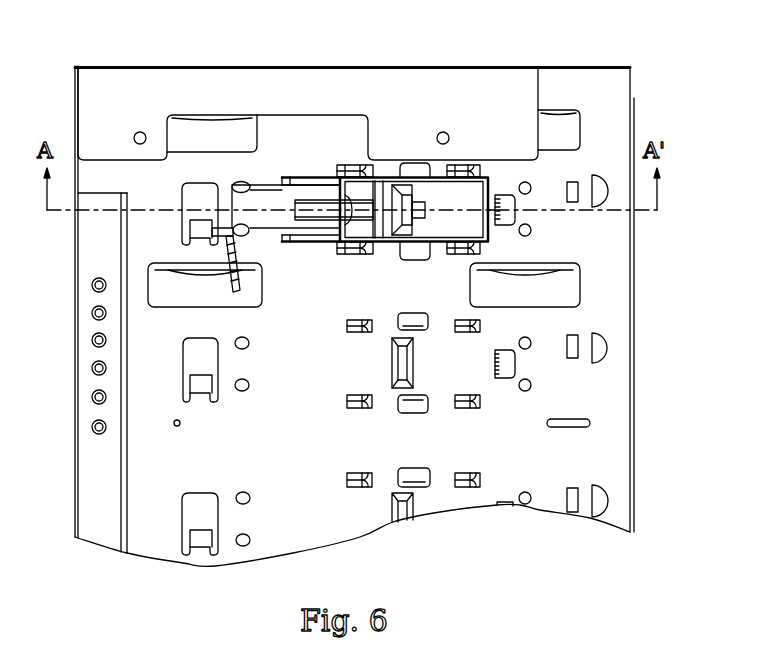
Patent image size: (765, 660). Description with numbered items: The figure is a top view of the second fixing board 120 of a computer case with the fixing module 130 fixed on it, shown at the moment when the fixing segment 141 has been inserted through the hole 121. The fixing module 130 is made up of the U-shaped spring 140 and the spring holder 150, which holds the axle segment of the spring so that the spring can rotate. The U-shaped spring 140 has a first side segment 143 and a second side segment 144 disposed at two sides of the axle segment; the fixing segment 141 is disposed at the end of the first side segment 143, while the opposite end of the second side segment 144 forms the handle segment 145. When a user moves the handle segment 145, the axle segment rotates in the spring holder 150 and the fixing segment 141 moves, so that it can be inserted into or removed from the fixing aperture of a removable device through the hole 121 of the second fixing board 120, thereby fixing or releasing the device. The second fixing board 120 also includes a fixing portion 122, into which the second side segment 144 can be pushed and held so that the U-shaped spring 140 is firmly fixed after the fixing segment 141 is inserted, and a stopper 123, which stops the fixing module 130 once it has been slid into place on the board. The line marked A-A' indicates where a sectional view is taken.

The second fixing board 120 is at (354, 316).
The hole 121 is at (242, 182).
The fixing portion 122 is at (182, 231).
The stopper 123 is at (515, 215).
The fixing module 130 is at (322, 175).
The U-shaped spring 140 is at (265, 157).
The fixing segment 141 is at (233, 188).
The first side segment 143 is at (273, 180).
The second side segment 144 is at (308, 239).
The handle segment 145 is at (230, 280).
The spring holder 150 is at (412, 234).